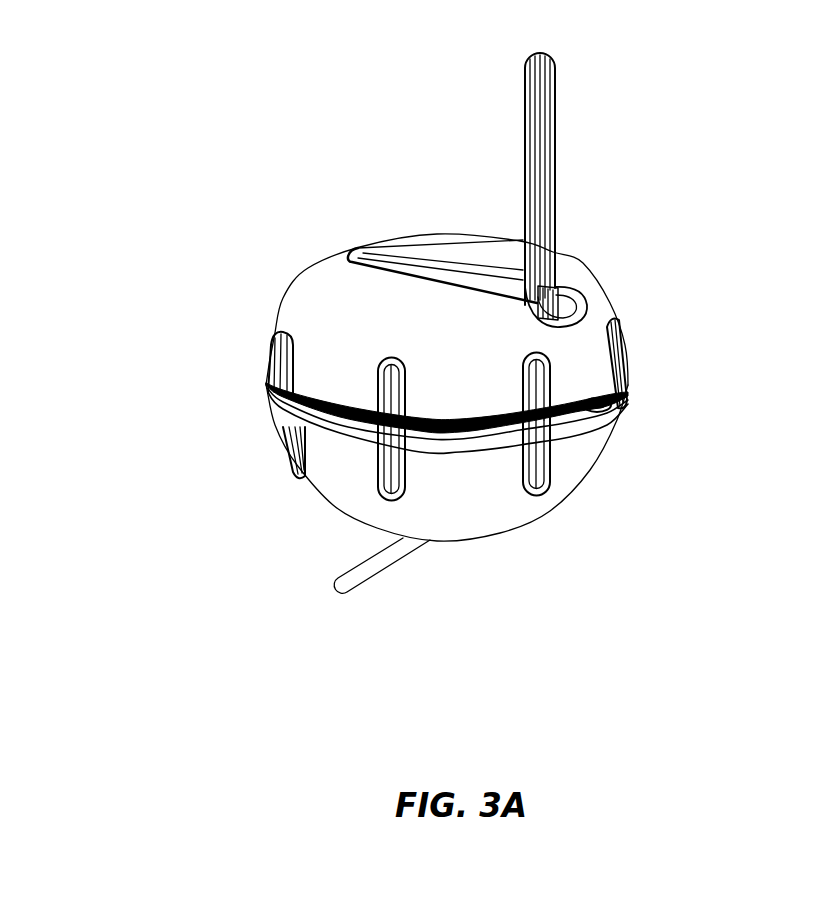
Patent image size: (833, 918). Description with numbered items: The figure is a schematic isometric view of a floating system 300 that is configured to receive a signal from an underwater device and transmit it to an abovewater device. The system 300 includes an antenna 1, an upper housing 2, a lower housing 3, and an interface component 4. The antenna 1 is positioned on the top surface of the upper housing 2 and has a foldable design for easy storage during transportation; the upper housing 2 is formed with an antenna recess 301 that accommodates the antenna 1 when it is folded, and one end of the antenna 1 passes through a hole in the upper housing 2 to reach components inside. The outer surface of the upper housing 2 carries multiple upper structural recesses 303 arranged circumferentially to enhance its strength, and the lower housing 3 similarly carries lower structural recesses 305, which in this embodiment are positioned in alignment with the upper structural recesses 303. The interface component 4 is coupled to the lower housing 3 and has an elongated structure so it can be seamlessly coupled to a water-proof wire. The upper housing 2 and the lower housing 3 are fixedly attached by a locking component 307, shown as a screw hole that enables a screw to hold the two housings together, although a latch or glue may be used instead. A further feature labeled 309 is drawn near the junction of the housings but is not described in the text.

The floating system 300 is at (438, 346).
The antenna 1 is at (538, 148).
The upper housing 2 is at (311, 307).
The lower housing 3 is at (337, 480).
The interface component 4 is at (373, 576).
The antenna recess 301 is at (383, 260).
The upper structural recesses 303 is at (540, 392).
The lower structural recesses 305 is at (533, 467).
The locking component 307 is at (613, 410).
The hinge 309 is at (305, 418).